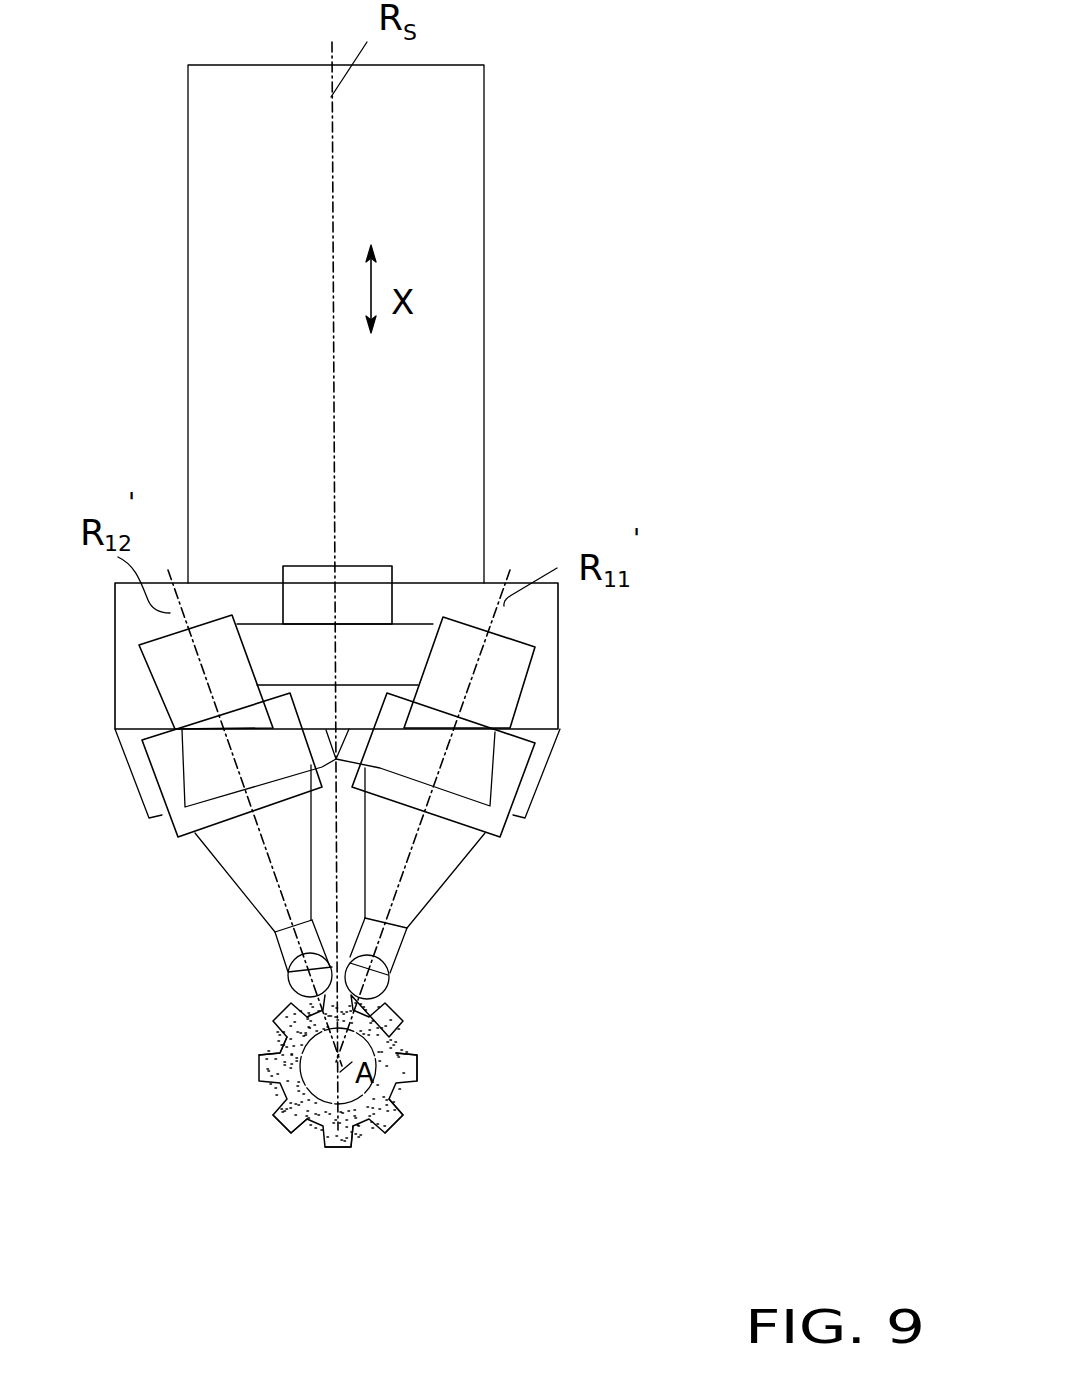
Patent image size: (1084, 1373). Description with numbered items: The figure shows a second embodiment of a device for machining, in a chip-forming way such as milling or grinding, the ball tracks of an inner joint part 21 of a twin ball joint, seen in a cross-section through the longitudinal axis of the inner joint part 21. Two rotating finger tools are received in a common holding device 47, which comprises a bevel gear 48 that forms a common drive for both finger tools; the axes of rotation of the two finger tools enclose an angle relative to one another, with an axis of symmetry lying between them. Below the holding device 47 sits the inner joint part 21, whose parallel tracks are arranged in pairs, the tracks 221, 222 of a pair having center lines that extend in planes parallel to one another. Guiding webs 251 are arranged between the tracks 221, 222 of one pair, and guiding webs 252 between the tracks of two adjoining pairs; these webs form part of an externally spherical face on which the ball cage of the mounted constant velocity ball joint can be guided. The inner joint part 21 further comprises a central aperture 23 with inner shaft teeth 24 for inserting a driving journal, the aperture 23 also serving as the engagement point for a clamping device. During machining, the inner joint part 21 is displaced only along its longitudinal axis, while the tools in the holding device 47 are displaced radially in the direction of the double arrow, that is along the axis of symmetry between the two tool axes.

The common holding device 47 is at (470, 375).
The bevel gear 48 is at (404, 648).
The inner joint part 21 is at (450, 1015).
The central aperture 23 is at (278, 1037).
The inner shaft teeth 24 is at (278, 1070).
The guiding webs 251 is at (430, 1063).
The guiding webs 252 is at (413, 1127).
The track of a pair of tracks 221 is at (313, 1132).
The track of a pair of tracks 222 is at (368, 1140).